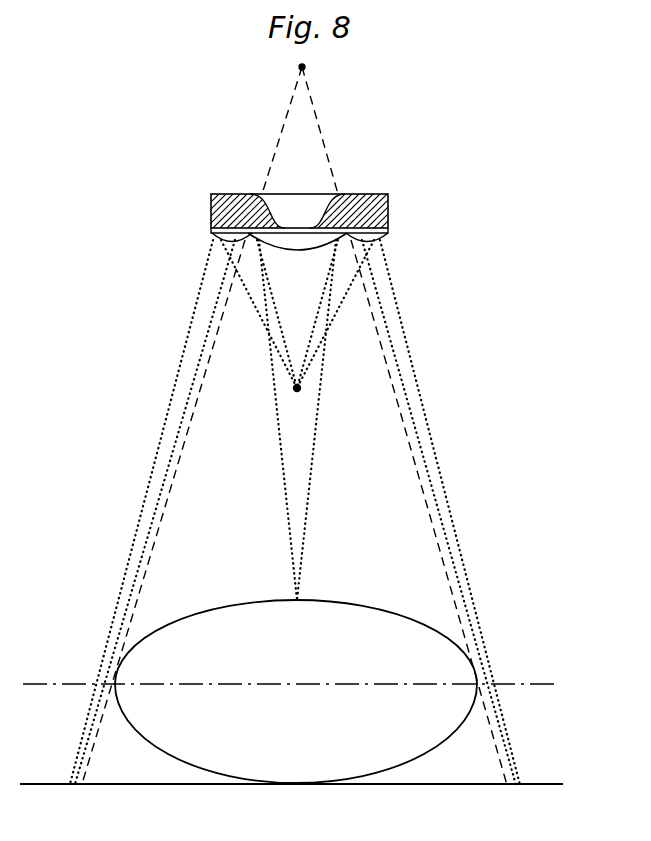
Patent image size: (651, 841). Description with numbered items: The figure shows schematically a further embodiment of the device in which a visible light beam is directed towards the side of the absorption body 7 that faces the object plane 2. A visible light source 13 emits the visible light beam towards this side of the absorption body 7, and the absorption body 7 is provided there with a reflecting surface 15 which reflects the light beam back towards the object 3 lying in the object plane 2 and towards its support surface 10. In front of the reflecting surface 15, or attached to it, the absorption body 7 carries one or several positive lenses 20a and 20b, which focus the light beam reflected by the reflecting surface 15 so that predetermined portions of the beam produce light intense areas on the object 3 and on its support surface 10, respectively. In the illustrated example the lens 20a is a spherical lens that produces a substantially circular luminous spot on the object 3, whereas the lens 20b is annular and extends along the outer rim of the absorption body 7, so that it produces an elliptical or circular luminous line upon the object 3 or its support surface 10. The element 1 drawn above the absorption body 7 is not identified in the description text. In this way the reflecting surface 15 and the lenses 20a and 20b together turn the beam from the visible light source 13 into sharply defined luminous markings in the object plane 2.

The light source 1 is at (305, 67).
The absorption body 7 is at (368, 194).
The reflecting surface 15 is at (211, 231).
The positive lens 20a is at (291, 250).
The annular positive lens 20b is at (215, 240).
The visible light source 13 is at (301, 388).
The object 3 is at (388, 612).
The object plane 2 is at (539, 684).
The support surface 10 is at (157, 786).